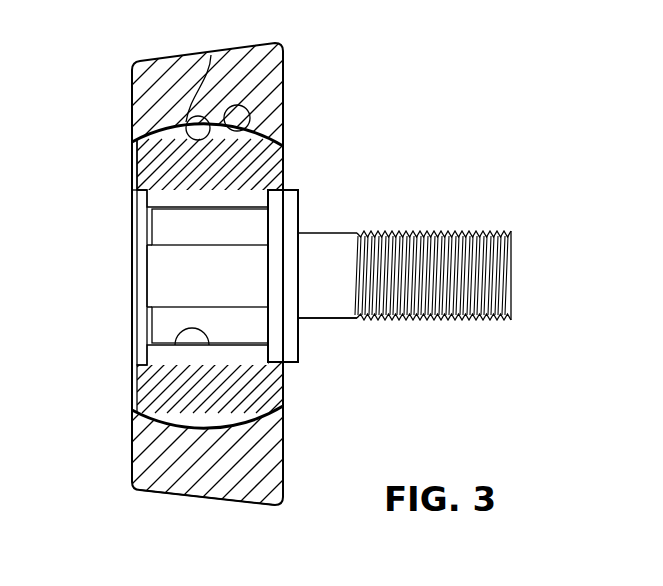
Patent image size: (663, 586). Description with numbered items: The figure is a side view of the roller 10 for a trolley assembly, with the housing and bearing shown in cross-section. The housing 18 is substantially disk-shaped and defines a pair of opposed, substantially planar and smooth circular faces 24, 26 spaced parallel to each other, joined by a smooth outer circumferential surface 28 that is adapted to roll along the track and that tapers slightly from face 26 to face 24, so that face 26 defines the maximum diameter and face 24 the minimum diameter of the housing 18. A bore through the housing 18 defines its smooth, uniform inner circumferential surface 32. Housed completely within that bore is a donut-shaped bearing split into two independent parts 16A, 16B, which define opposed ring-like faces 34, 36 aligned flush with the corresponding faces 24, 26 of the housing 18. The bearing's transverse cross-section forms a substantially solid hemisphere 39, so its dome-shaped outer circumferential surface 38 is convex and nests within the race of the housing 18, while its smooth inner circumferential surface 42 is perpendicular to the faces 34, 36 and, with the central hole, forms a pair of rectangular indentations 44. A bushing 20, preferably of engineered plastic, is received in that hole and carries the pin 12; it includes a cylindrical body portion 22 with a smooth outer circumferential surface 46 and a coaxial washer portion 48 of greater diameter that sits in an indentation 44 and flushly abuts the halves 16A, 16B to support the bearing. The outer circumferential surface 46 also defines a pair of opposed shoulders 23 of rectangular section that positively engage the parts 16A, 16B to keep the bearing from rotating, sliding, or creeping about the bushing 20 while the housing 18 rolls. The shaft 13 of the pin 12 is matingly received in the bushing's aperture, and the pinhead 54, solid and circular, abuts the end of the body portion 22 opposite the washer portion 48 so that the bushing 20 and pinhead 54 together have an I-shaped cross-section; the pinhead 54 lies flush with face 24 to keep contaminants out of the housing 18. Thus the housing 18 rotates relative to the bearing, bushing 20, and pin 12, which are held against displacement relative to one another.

The roller 10 is at (355, 124).
The pin 12 is at (453, 239).
The shaft 13 is at (513, 240).
The part of the split bearing 16A is at (296, 172).
The part of the split bearing 16B is at (296, 388).
The housing 18 is at (296, 78).
The bushing 20 is at (316, 351).
The body portion 22 is at (138, 233).
The shoulder 23 is at (148, 290).
The face 24 is at (132, 440).
The face 26 is at (287, 447).
The outer circumferential surface 28 is at (207, 504).
The inner circumferential surface 32 is at (211, 55).
The face 34 is at (134, 376).
The face 36 is at (287, 372).
The outer circumferential surface 38 is at (200, 130).
The hemisphere 39 is at (137, 169).
The inner circumferential surface 42 is at (212, 345).
The indentation 44 is at (134, 207).
The outer circumferential surface 46 is at (135, 150).
The washer portion 48 is at (288, 333).
The pinhead 54 is at (170, 288).